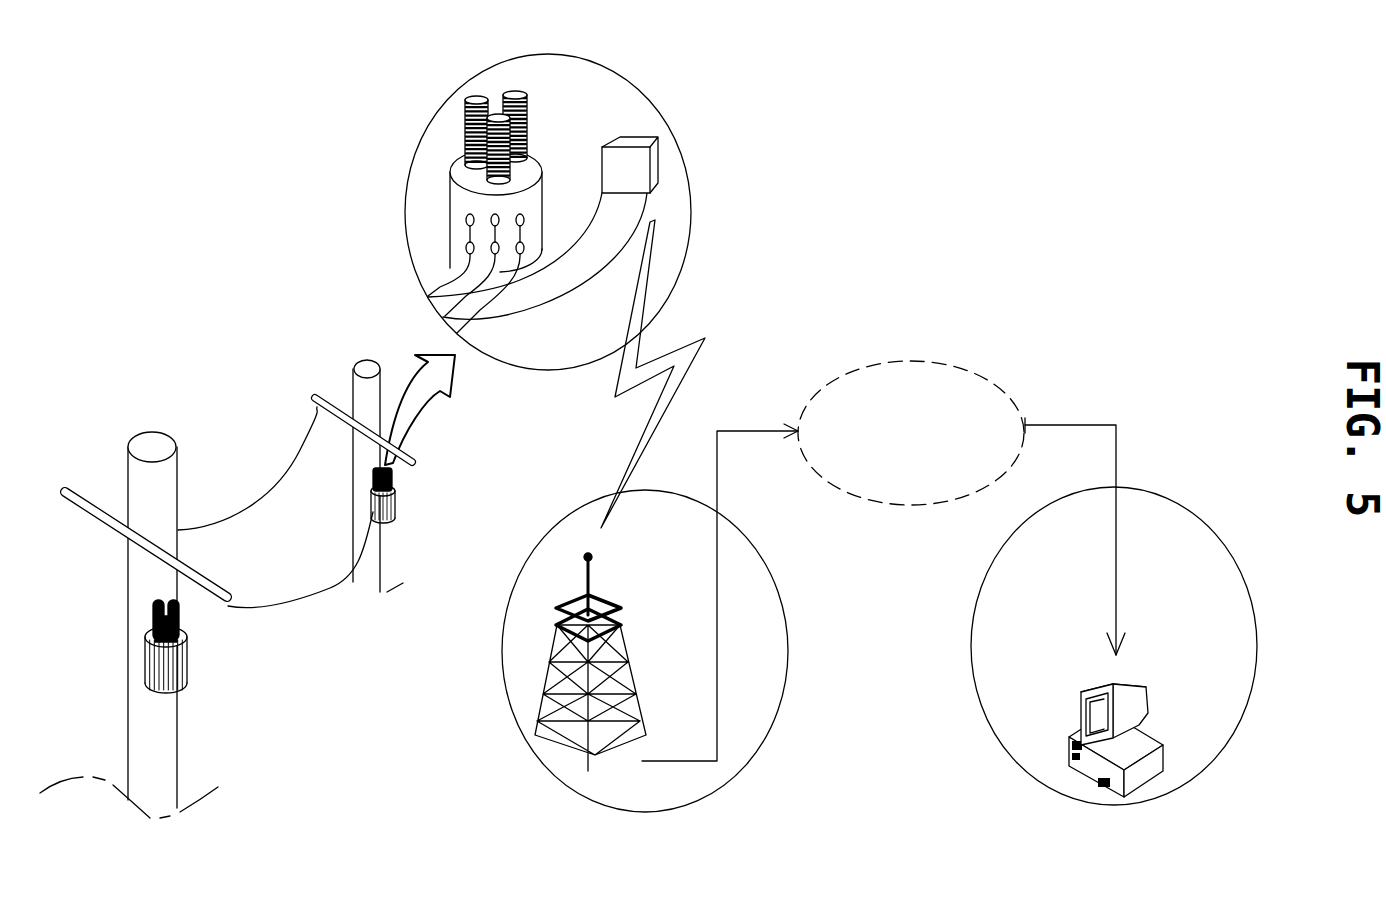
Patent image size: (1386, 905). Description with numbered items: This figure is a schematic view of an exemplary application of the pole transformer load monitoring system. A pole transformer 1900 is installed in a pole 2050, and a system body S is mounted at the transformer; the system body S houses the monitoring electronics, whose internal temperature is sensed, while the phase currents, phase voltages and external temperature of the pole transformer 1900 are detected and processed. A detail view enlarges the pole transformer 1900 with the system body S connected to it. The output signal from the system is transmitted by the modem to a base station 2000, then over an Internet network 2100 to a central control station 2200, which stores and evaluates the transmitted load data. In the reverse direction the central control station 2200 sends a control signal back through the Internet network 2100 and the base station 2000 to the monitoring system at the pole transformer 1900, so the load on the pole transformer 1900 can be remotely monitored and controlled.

The pole transformer 1900 is at (457, 188).
The pole 2050 is at (152, 445).
The system body S is at (651, 138).
The base station 2000 is at (565, 737).
The Internet network 2100 is at (922, 372).
The central control station 2200 is at (1165, 493).